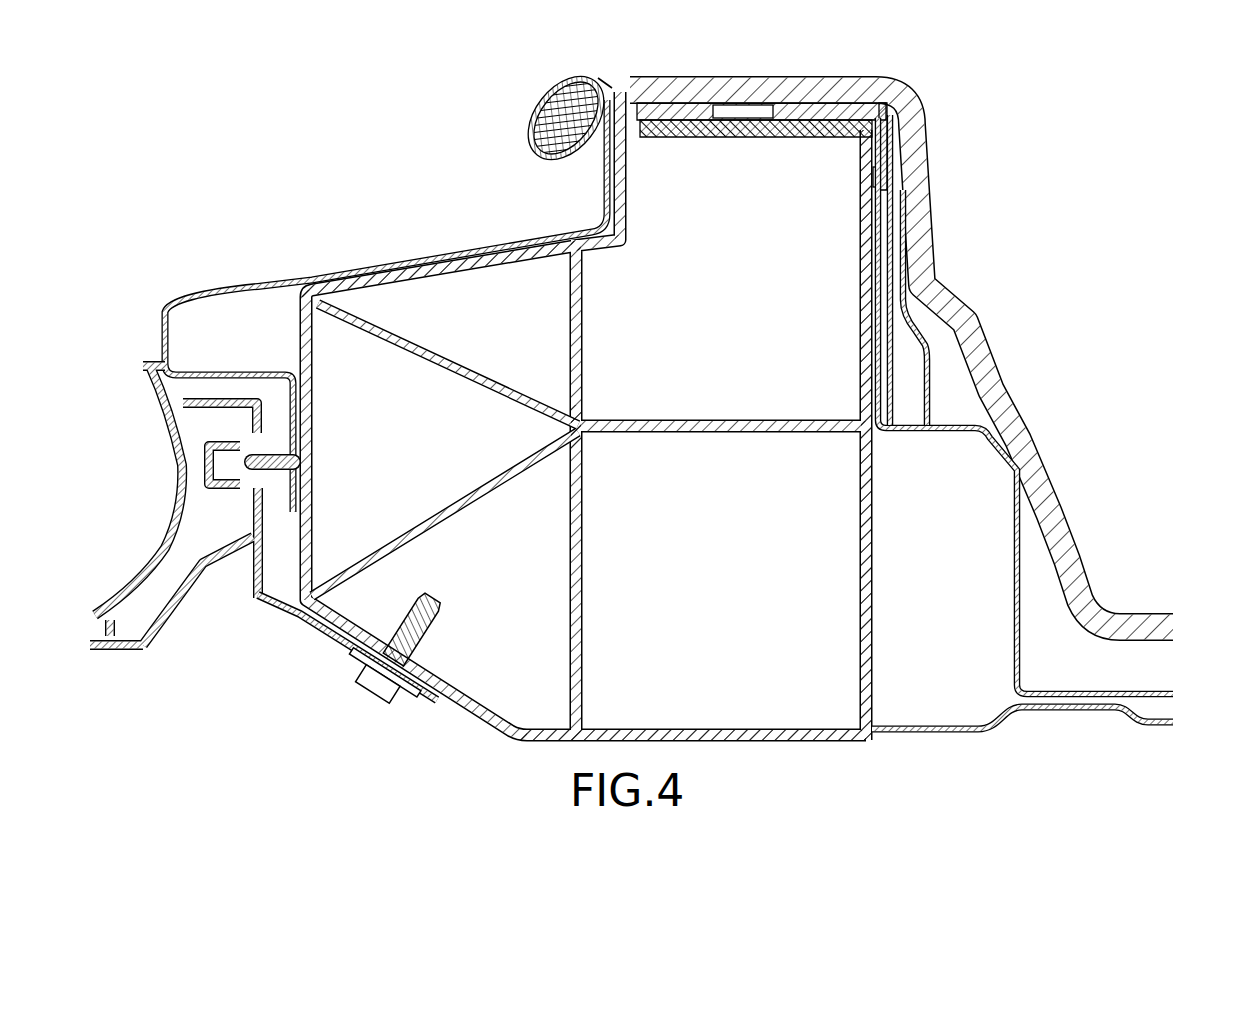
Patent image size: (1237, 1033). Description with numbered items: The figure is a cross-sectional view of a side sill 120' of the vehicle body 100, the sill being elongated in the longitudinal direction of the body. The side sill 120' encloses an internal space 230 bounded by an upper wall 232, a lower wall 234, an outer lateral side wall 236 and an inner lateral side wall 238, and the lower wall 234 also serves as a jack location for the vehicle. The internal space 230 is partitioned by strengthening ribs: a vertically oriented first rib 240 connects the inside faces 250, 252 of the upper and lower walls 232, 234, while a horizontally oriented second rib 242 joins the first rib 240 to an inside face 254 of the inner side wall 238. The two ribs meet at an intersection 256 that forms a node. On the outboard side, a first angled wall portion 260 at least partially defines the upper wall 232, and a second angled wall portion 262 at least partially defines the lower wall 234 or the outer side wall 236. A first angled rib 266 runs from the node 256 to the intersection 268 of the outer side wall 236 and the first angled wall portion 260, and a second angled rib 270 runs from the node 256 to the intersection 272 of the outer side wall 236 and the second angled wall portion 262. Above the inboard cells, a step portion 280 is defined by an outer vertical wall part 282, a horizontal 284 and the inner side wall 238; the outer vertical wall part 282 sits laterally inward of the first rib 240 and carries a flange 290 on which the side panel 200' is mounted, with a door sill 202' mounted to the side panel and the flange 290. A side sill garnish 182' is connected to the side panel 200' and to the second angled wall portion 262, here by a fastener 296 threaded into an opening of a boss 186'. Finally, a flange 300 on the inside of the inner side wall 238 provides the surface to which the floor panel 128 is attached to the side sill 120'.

The vehicle body 100 is at (1052, 98).
The side sill 120' is at (586, 474).
The floor panel 128 is at (1172, 733).
The side sill garnish 182' is at (191, 509).
The boss 186' is at (443, 636).
The side panel 200' is at (386, 306).
The door sill 202' is at (543, 108).
The internal space 230 is at (467, 292).
The upper wall 232 is at (403, 262).
The lower wall 234 is at (830, 742).
The outer lateral side wall 236 is at (297, 333).
The inner lateral side wall 238 is at (876, 562).
The first rib 240 is at (588, 338).
The second rib 242 is at (742, 433).
The inside face of upper wall 250 is at (600, 246).
The inside face of lower wall 252 is at (690, 727).
The inside face of inner side wall 254 is at (860, 338).
The intersection of first and second ribs 256 is at (588, 418).
The first angled wall portion 260 is at (350, 268).
The second angled wall portion 262 is at (472, 717).
The first angled rib 266 is at (428, 365).
The intersection of outer side wall and first angled wall portion 268 is at (300, 273).
The second angled rib 270 is at (470, 505).
The intersection of outer side wall and second angled wall portion 272 is at (302, 603).
The step portion 280 is at (903, 92).
The outer vertical wall part 282 is at (628, 178).
The horizontal 284 is at (820, 135).
The flange 290 is at (600, 72).
The fastener 296 is at (370, 712).
The flange 300 is at (933, 735).